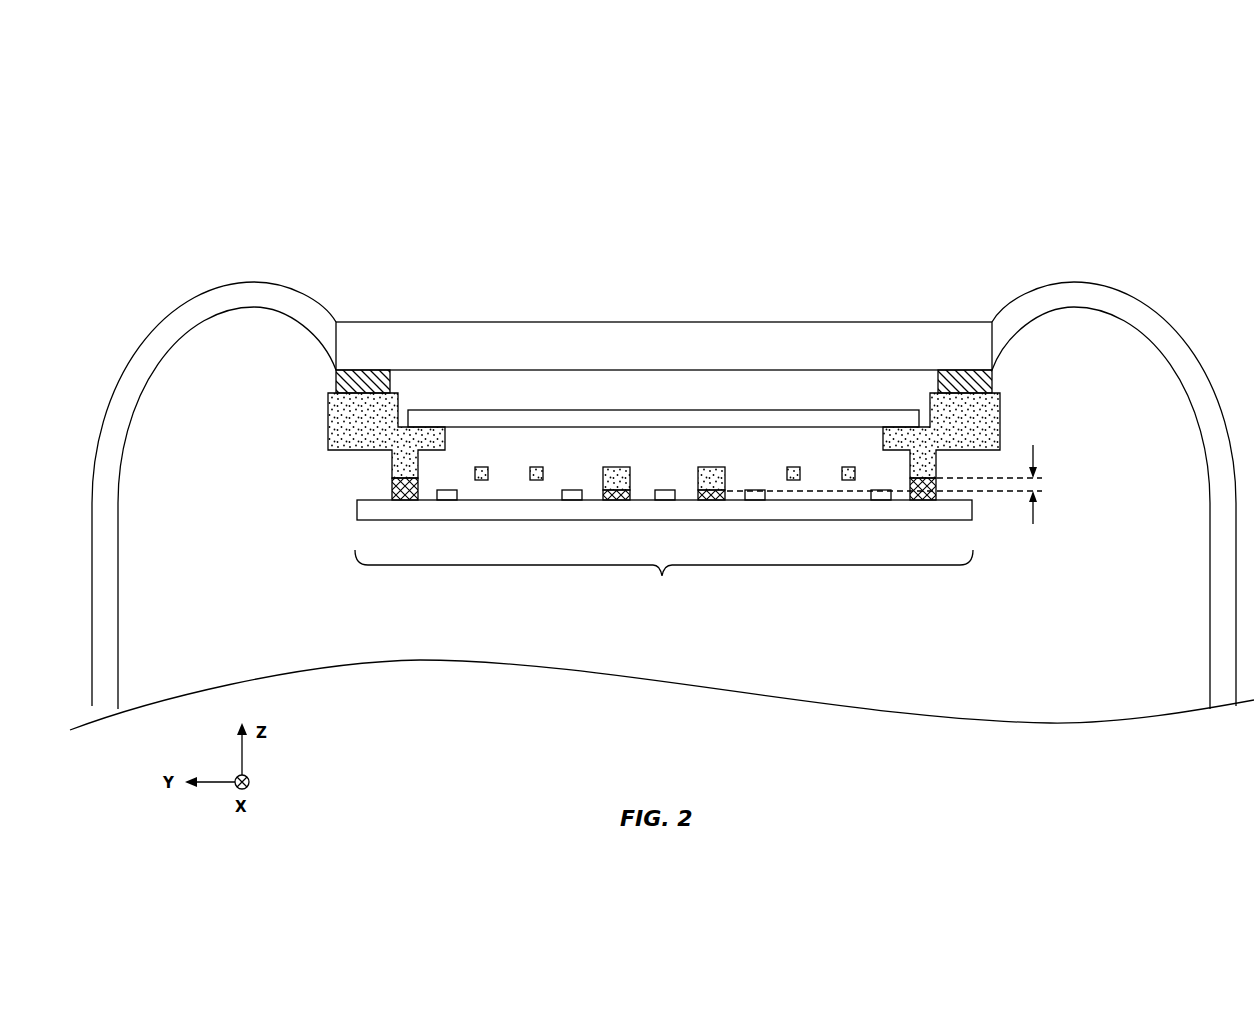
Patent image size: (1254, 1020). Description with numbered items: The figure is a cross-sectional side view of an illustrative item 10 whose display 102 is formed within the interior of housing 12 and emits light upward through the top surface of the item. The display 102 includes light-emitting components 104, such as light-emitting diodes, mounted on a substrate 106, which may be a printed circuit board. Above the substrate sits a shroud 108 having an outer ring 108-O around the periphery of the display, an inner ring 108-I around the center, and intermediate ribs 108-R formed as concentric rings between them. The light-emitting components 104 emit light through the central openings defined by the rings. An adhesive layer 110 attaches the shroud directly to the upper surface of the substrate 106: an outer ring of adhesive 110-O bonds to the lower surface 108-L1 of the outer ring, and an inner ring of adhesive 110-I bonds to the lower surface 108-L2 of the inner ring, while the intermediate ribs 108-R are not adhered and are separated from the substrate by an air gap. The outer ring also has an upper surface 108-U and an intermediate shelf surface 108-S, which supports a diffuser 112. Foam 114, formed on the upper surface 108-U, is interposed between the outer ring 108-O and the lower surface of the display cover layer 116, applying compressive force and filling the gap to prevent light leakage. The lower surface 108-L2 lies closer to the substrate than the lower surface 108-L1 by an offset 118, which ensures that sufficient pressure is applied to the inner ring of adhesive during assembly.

The item 10 is at (1010, 162).
The housing 12 is at (1172, 360).
The display 102 is at (664, 575).
The light-emitting components 104 is at (572, 500).
The substrate 106 is at (357, 517).
The shroud 108 is at (328, 421).
The upper surface 108-U is at (335, 392).
The shelf surface 108-S is at (428, 428).
The lower surface 108-L1 is at (405, 472).
The lower surface 108-L2 is at (605, 483).
The inner ring 108-I is at (708, 470).
The intermediate ribs 108-R is at (840, 470).
The outer ring 108-O is at (1000, 405).
The adhesive layer 110 is at (392, 489).
The inner ring of adhesive 110-I is at (710, 500).
The outer ring of adhesive 110-O is at (922, 500).
The diffuser 112 is at (508, 415).
The foam 114 is at (368, 370).
The display cover layer 116 is at (683, 333).
The offset 118 is at (1035, 514).